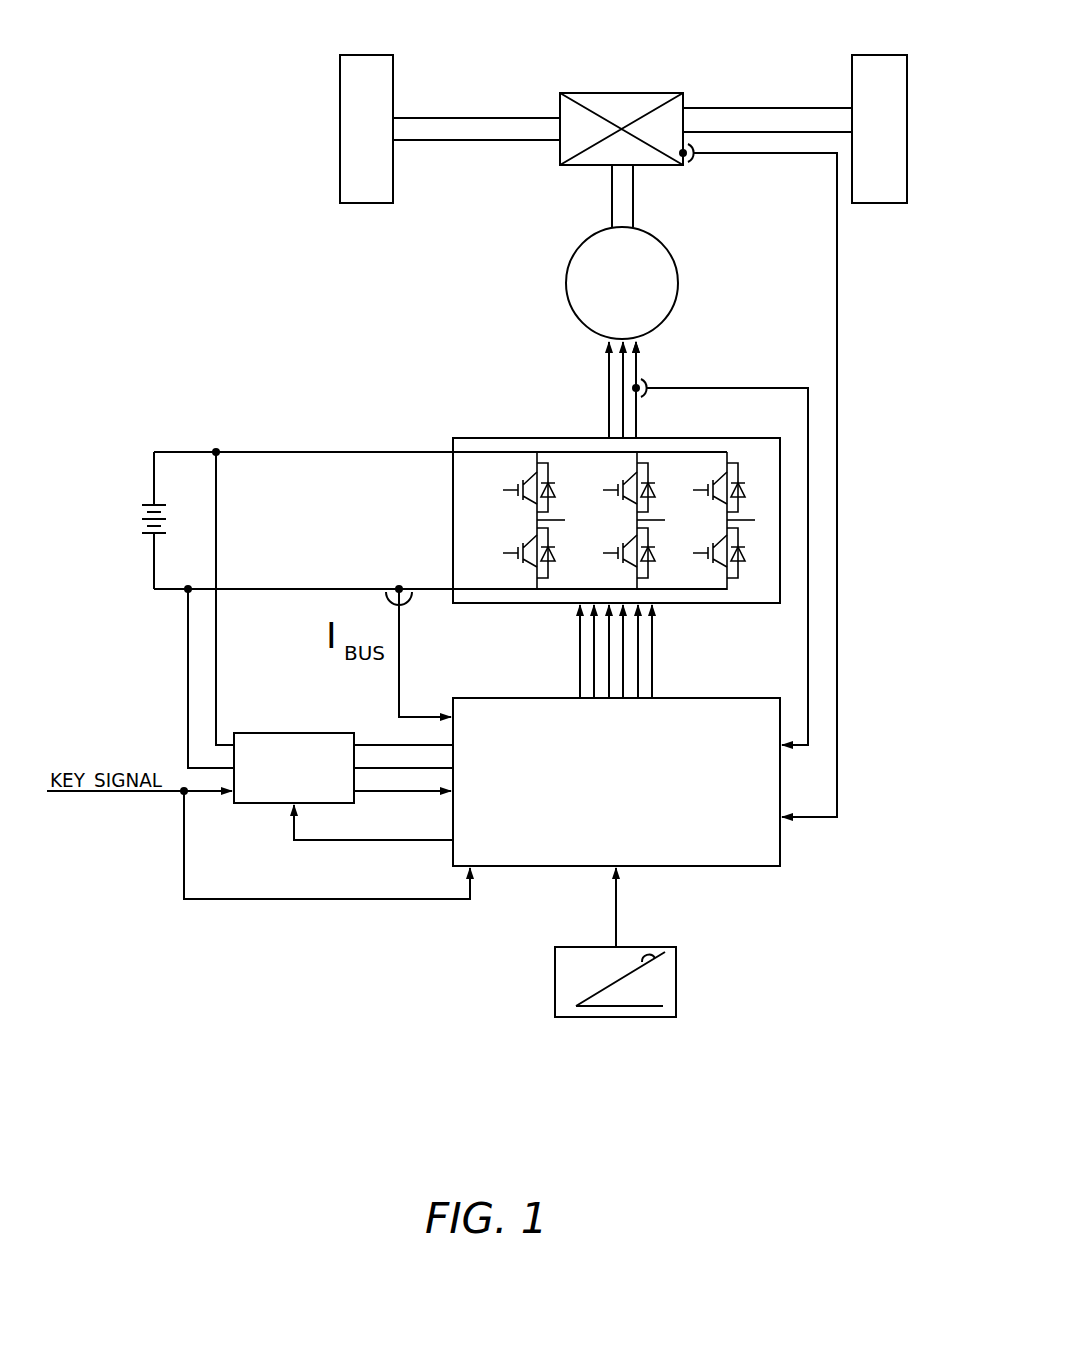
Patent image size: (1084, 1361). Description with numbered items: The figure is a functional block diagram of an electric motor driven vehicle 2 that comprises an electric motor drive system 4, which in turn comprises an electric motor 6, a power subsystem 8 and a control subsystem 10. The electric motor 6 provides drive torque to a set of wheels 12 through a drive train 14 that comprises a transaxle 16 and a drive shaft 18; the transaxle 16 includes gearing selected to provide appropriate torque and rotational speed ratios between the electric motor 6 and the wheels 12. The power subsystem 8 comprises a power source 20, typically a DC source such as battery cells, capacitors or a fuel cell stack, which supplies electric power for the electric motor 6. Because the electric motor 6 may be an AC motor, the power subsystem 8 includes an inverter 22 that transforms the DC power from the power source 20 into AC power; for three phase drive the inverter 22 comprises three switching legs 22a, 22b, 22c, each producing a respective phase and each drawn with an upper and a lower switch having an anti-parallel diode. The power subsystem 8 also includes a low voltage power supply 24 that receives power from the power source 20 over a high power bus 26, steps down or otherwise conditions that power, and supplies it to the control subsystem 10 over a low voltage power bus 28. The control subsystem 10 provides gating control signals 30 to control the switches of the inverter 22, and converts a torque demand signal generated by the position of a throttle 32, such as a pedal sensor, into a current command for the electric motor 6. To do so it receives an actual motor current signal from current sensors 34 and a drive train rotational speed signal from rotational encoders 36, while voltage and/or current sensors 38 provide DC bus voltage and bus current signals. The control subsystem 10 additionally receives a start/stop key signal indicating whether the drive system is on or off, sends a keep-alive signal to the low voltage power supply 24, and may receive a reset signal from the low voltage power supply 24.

The electric motor driven vehicle 2 is at (218, 100).
The electric motor drive system 4 is at (297, 962).
The electric motor 6 is at (563, 282).
The power subsystem 8 is at (277, 403).
The control subsystem 10 is at (755, 698).
The wheels 12 is at (365, 203).
The drive train 14 is at (622, 115).
The transaxle 16 is at (622, 93).
The drive shaft 18 is at (507, 141).
The power source 20 is at (152, 505).
The inverter 22 is at (620, 488).
The switching leg 22a is at (573, 483).
The switching leg 22b is at (672, 483).
The switching leg 22c is at (757, 483).
The low voltage power supply 24 is at (272, 733).
The high power bus 26 is at (157, 620).
The low voltage power bus 28 is at (380, 720).
The gating control signals 30 is at (660, 660).
The throttle 32 is at (676, 985).
The current sensors 34 is at (646, 378).
The rotational encoders 36 is at (698, 168).
The voltage and/or current sensors 38 is at (402, 605).